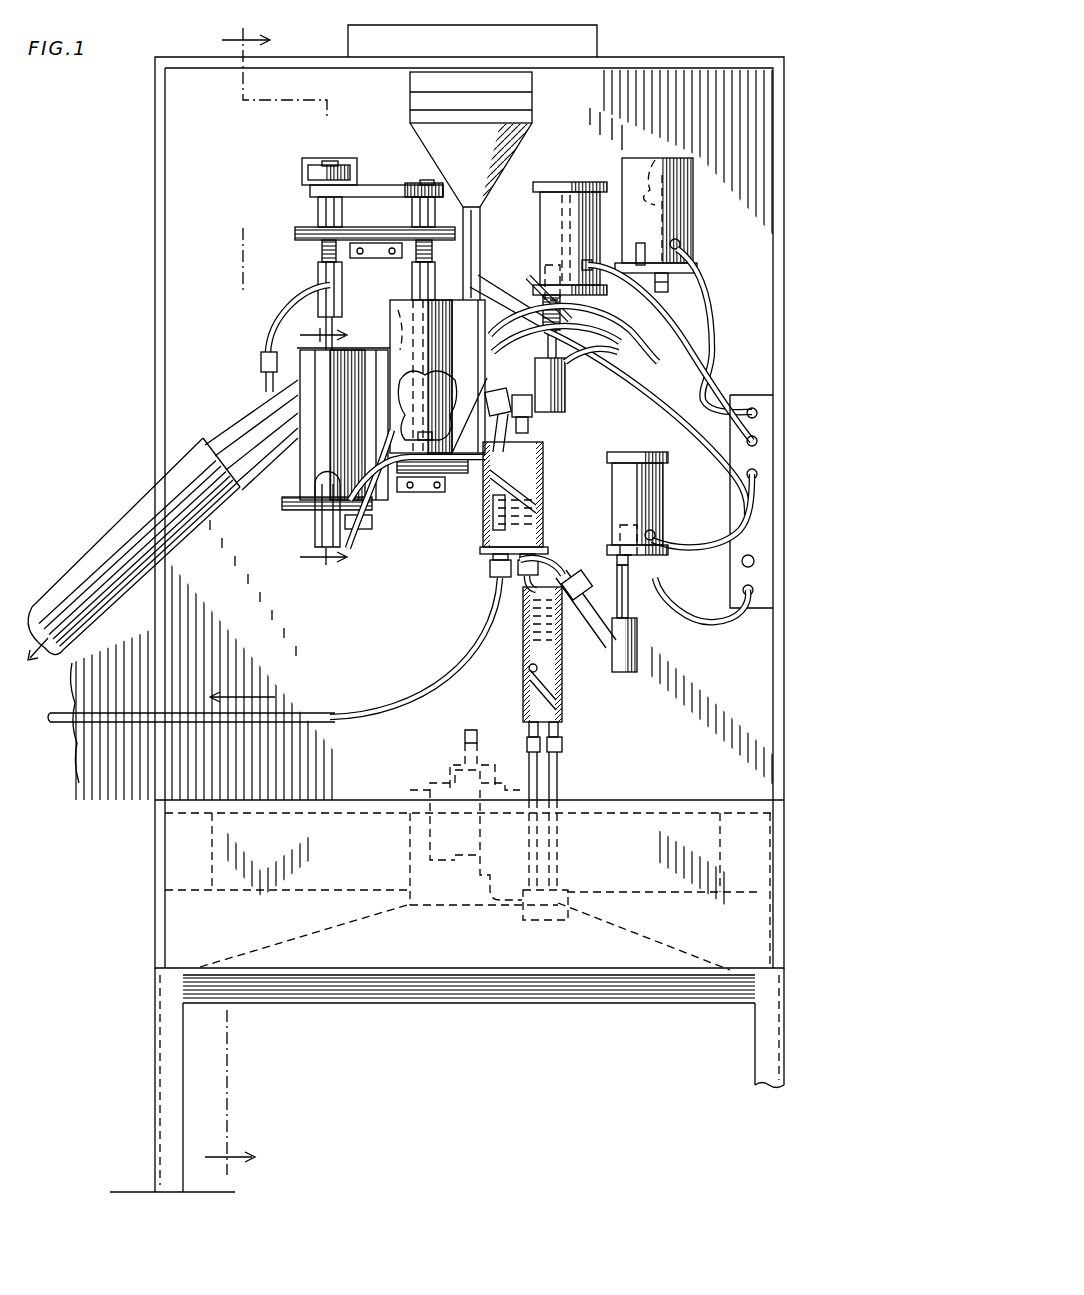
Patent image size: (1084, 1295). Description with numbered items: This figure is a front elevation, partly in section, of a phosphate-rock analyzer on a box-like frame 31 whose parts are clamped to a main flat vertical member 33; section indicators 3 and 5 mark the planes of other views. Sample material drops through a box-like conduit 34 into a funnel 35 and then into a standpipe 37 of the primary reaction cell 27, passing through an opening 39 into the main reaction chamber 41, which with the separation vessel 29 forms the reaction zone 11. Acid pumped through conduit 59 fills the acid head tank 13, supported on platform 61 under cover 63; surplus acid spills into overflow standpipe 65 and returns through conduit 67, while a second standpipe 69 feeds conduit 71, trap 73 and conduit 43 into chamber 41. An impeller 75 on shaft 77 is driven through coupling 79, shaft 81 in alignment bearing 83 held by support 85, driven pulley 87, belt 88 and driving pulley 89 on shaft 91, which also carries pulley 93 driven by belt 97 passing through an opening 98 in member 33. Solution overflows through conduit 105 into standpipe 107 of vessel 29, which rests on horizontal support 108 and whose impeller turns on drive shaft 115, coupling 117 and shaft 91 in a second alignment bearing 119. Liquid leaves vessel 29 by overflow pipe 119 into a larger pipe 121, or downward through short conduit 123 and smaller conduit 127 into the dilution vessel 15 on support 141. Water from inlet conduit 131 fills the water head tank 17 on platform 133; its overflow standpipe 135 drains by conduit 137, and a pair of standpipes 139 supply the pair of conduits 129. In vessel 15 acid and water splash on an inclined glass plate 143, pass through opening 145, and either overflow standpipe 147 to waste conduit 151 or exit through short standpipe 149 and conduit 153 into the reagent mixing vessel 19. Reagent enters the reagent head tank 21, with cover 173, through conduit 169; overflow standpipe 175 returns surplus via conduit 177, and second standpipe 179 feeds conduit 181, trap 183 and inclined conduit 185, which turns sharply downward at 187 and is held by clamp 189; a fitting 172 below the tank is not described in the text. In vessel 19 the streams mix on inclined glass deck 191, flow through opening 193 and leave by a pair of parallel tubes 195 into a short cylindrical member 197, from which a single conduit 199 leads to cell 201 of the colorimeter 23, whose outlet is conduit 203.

The section line 3- 3 is at (266, 607).
The section line 5- 5 is at (316, 446).
The reaction zone 11 is at (381, 304).
The acid head tank 13 is at (528, 211).
The dilution tank 15 is at (553, 462).
The water head tank 17 is at (706, 187).
The reagent mixing tank 19 is at (574, 690).
The reagent head tank 21 is at (600, 502).
The colorimeter 23 is at (437, 766).
The primary reaction vessel 27 is at (483, 292).
The separation vessel 29 is at (289, 486).
The frame 31 is at (153, 351).
The main flat vertical member 33 is at (212, 201).
The box-like conduit 34 is at (533, 104).
The funnel 35 is at (510, 150).
The standpipe 37 is at (452, 452).
The opening 39 is at (440, 395).
The main reaction chamber 41 is at (440, 326).
The conduit 43 is at (450, 350).
The conduit 59 is at (690, 360).
The platform 61 is at (540, 290).
The cover 63 is at (575, 168).
The overflow standpipe 65 is at (585, 244).
The return conduit 67 is at (628, 395).
The second standpipe 69 is at (550, 268).
The conduit 71 is at (562, 362).
The trap 73 is at (565, 383).
The impeller 75 is at (425, 432).
The shaft 77 is at (405, 390).
The coupling 79 is at (434, 268).
The shaft 81 is at (410, 183).
The alignment bearing 83 is at (411, 212).
The support 85 is at (296, 238).
The driven pulley 87 is at (428, 181).
The pulley belt 88 is at (398, 189).
The driving pulley 89 is at (316, 206).
The shaft 91 is at (332, 160).
The pulley 93 is at (308, 170).
The pulley belt 97 is at (306, 180).
The opening 98 is at (302, 163).
The overflow conduit 105 is at (397, 308).
The standpipe 107 is at (372, 462).
The horizontal support 108 is at (352, 528).
The drive shaft 115 is at (316, 292).
The coupling 117 is at (318, 275).
The overflow pipe 119 is at (296, 232).
The larger pipe 121 is at (118, 545).
The short conduit 123 is at (318, 520).
The smaller diameter conduit 127 is at (357, 530).
The pair of conduits 129 is at (528, 433).
The inlet conduit 131 is at (714, 302).
The platform 133 is at (700, 270).
The overflow standpipe 135 is at (660, 160).
The conduit 137 is at (612, 352).
The pair of standpipes 139 is at (682, 247).
The horizontal support 141 is at (483, 548).
The inclined glass plate 143 is at (515, 485).
The opening 145 is at (538, 500).
The overflow standpipe 147 is at (478, 524).
The short standpipe 149 is at (538, 540).
The conduit 151 is at (458, 640).
The conduit 153 is at (522, 598).
The conduit 169 is at (700, 552).
The fitting 172 is at (617, 560).
The cover 173 is at (638, 452).
The overflow standpipe 175 is at (650, 500).
The return conduit 177 is at (722, 624).
The second standpipe 179 is at (620, 532).
The conduit 181 is at (630, 612).
The trap 183 is at (640, 660).
The upwardly inclined conduit 185 is at (600, 636).
The downward turn 187 is at (578, 577).
The clamp 189 is at (640, 242).
The inclined glass deck 191 is at (523, 667).
The opening 193 is at (560, 698).
The pair of parallel tubes 195 is at (555, 762).
The short cylindrical member 197 is at (560, 905).
The single tube 199 is at (480, 905).
The cell 201 is at (470, 858).
The conduit 203 is at (478, 735).